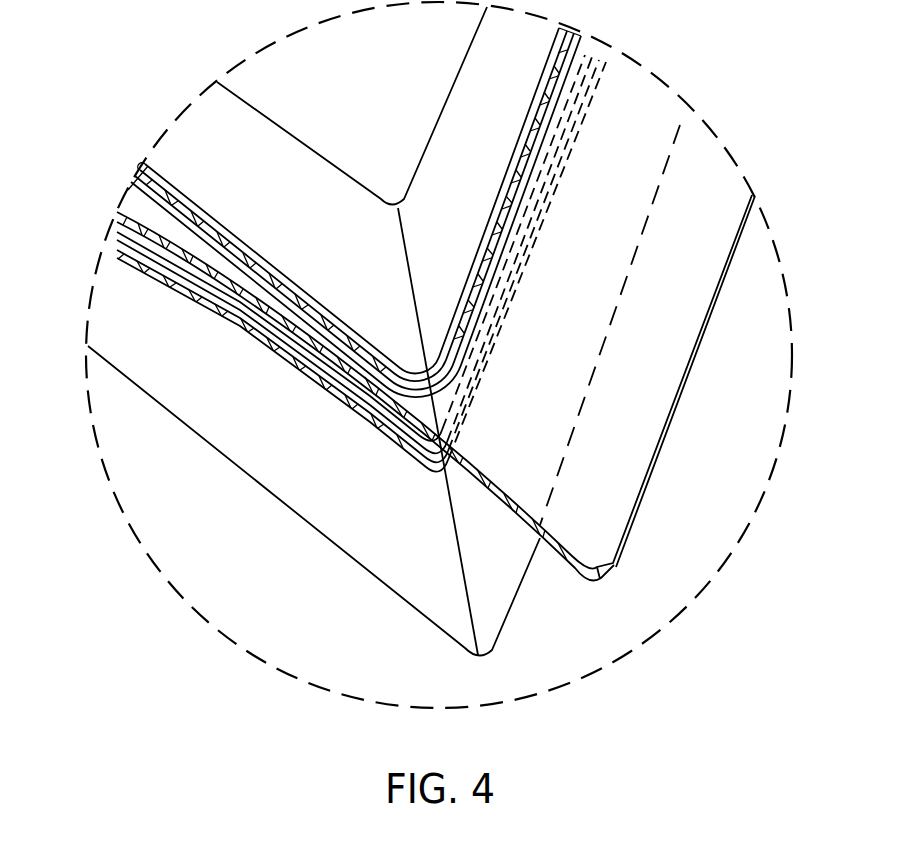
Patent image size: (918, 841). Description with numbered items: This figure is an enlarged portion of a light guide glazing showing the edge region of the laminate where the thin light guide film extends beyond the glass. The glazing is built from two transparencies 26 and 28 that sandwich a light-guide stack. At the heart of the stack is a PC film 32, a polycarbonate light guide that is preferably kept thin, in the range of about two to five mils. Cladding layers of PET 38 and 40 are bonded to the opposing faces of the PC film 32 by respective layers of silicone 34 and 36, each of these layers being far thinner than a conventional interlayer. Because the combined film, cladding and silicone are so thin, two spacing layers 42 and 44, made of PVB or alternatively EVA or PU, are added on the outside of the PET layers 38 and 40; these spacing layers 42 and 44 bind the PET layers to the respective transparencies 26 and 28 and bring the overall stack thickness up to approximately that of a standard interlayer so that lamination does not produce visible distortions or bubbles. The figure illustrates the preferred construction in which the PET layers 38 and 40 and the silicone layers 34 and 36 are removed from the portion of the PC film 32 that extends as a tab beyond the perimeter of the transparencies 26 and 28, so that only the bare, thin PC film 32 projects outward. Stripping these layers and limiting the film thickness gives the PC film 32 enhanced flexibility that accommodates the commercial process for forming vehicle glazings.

The transparency 26 is at (388, 586).
The transparency 28 is at (214, 84).
The PC film 32 is at (366, 378).
The silicone layer 34 is at (270, 335).
The silicone layer 36 is at (177, 217).
The PET cladding layer 38 is at (150, 240).
The PET cladding layer 40 is at (148, 167).
The spacing layer 42 is at (113, 230).
The spacing layer 44 is at (140, 173).